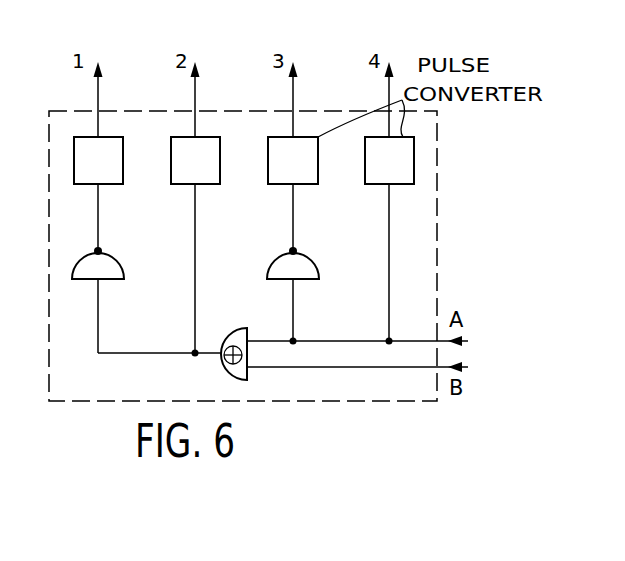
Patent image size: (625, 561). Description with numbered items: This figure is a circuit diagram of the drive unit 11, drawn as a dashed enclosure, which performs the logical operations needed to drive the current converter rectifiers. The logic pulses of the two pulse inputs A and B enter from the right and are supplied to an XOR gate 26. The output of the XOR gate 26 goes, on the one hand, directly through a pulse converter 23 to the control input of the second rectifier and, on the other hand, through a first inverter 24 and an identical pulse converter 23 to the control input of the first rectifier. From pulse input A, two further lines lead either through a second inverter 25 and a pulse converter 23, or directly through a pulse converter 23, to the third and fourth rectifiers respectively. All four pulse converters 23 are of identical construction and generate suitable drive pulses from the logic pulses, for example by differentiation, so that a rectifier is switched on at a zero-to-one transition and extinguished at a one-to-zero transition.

The drive unit 11 is at (100, 392).
The pulse converter 23 is at (85, 173).
The first inverter 24 is at (105, 268).
The second inverter 25 is at (296, 266).
The XOR gate 26 is at (238, 338).